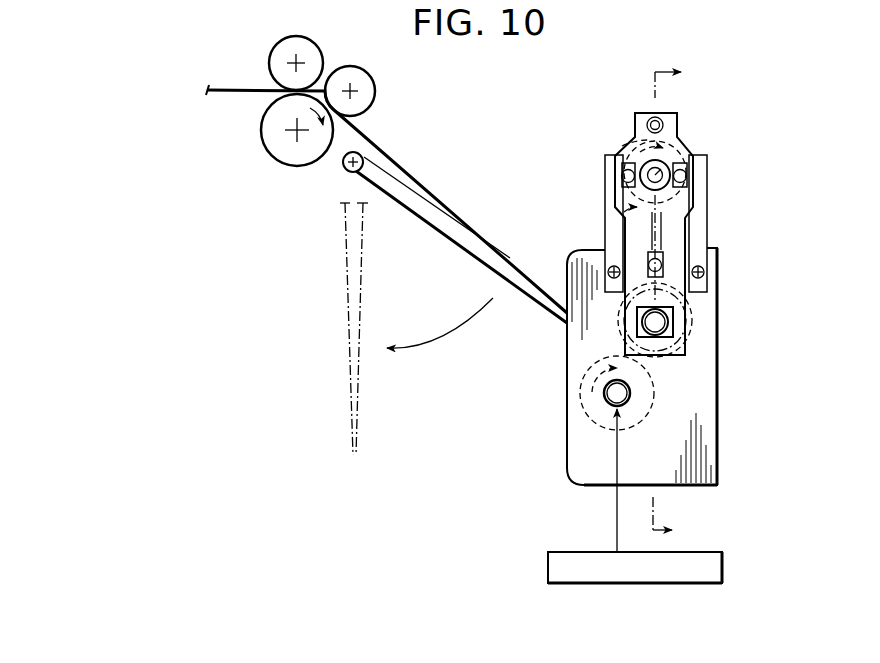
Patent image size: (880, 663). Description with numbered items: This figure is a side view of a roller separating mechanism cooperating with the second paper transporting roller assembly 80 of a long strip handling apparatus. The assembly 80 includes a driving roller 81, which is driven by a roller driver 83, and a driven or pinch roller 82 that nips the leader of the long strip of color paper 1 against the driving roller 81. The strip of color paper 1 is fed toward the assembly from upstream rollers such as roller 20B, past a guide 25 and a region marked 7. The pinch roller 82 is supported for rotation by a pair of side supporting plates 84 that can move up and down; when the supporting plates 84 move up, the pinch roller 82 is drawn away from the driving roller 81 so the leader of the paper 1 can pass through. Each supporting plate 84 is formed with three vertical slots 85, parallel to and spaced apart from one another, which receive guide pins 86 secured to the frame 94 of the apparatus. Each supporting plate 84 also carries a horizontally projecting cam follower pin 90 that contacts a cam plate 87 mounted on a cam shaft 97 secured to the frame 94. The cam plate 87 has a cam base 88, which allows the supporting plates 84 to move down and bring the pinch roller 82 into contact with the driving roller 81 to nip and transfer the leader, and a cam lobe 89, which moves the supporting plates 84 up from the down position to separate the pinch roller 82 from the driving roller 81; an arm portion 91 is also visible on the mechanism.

The long strip of color paper 1 is at (421, 190).
The tape guide 7 is at (463, 383).
The capstan roller 20B is at (299, 170).
The guide plate 25 is at (363, 292).
The second paper transporting roller assembly 80 is at (680, 302).
The driving roller 81 is at (652, 400).
The pinch roller 82 is at (695, 318).
The roller driver 83 is at (722, 568).
The side supporting plates 84 is at (692, 233).
The vertical slots 85 is at (622, 163).
The guide pins 86 is at (622, 178).
The cam plate 87 is at (678, 135).
The cam base 88 is at (623, 145).
The cam lobe 89 is at (622, 207).
The cam follower pin 90 is at (678, 117).
The arm 91 is at (700, 202).
The frame 94 is at (717, 437).
The cam shaft 97 is at (661, 171).